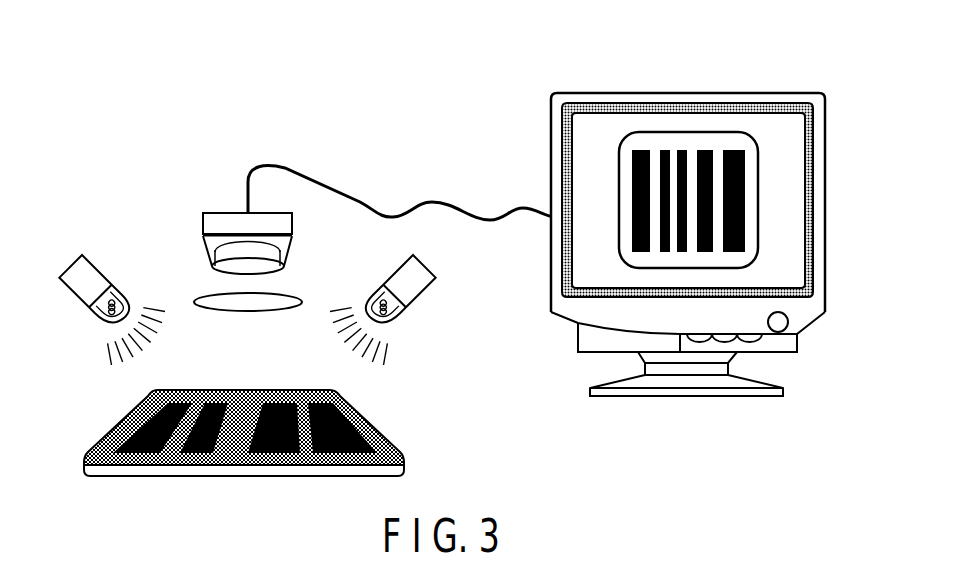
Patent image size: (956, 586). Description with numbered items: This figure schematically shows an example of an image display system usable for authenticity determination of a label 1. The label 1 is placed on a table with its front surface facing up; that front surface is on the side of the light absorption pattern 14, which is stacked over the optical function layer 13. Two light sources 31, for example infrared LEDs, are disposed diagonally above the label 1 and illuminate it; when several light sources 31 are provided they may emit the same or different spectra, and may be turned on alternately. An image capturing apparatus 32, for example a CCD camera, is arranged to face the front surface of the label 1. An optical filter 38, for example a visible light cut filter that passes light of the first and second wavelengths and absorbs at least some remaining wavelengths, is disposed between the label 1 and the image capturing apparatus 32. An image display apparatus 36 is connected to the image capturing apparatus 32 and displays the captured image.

The label 1 is at (394, 424).
The optical function layer 13 is at (100, 440).
The light absorption pattern 14 is at (293, 390).
The light sources 31 is at (82, 285).
The image capturing apparatus 32 is at (222, 212).
The image display apparatus 36 is at (808, 82).
The optical filter 38 is at (216, 313).